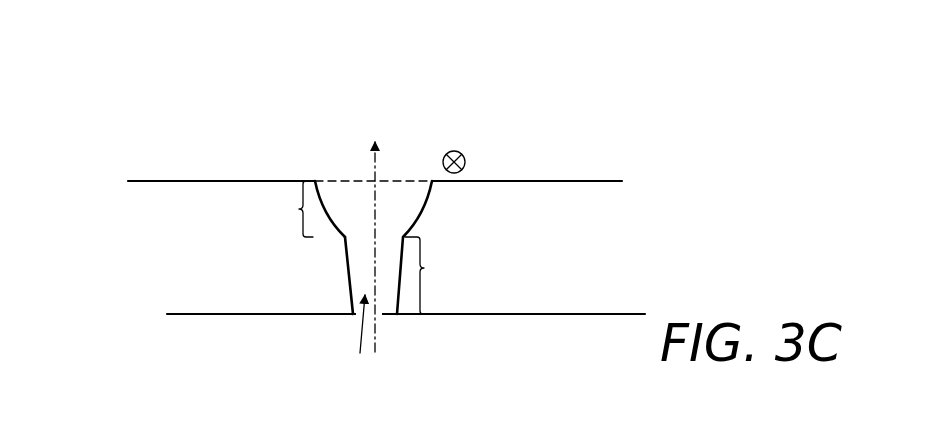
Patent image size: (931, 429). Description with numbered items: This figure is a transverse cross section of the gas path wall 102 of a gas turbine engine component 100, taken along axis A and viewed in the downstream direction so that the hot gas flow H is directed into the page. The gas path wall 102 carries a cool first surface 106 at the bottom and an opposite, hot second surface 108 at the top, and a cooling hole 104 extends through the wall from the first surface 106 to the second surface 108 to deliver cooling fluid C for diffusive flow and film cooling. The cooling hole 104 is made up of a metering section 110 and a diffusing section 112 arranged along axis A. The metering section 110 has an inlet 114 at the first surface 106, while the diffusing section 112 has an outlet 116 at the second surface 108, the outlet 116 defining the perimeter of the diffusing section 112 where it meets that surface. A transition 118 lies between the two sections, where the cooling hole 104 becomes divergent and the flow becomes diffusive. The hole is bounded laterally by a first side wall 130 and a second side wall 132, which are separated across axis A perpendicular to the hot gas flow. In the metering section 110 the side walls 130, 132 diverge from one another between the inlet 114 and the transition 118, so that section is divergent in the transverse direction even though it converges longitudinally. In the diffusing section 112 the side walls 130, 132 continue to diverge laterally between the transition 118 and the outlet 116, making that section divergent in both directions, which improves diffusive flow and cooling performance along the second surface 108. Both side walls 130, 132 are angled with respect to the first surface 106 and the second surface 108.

The gas turbine engine component 100 is at (100, 130).
The gas path wall 102 is at (226, 229).
The cooling hole 104 is at (388, 219).
The first surface 106 is at (519, 316).
The second surface 108 is at (250, 181).
The metering section 110 is at (437, 275).
The diffusing section 112 is at (282, 209).
The inlet 114 is at (387, 316).
The outlet 116 is at (340, 180).
The transition 118 is at (340, 240).
The first side wall 130 is at (351, 293).
The second side wall 132 is at (430, 204).